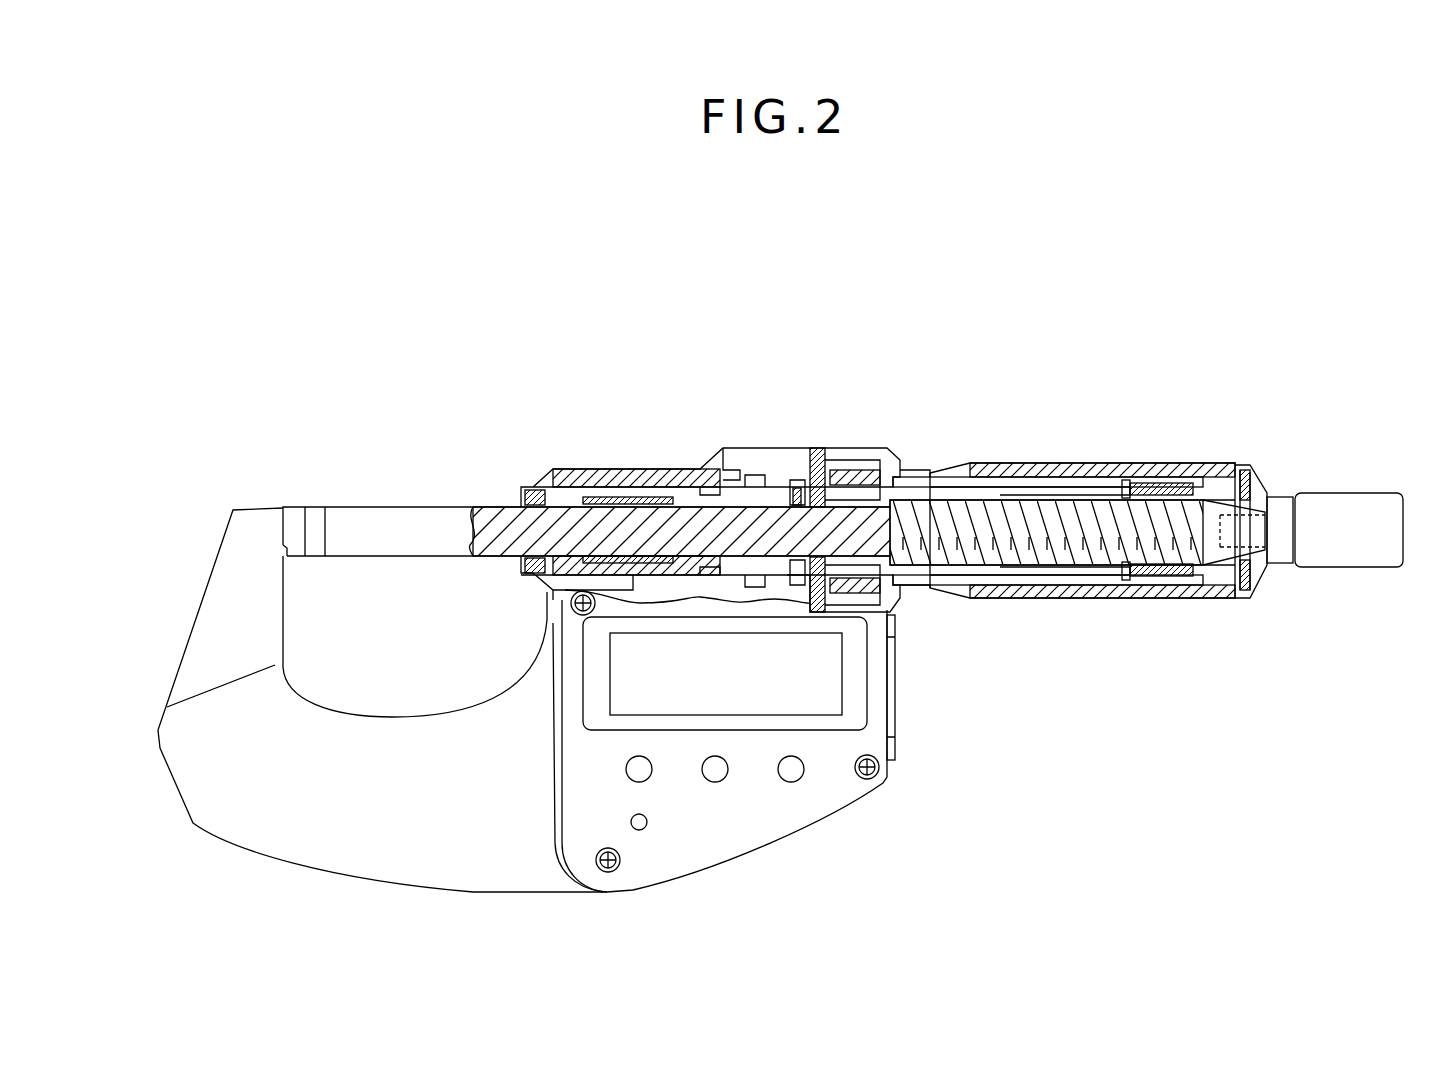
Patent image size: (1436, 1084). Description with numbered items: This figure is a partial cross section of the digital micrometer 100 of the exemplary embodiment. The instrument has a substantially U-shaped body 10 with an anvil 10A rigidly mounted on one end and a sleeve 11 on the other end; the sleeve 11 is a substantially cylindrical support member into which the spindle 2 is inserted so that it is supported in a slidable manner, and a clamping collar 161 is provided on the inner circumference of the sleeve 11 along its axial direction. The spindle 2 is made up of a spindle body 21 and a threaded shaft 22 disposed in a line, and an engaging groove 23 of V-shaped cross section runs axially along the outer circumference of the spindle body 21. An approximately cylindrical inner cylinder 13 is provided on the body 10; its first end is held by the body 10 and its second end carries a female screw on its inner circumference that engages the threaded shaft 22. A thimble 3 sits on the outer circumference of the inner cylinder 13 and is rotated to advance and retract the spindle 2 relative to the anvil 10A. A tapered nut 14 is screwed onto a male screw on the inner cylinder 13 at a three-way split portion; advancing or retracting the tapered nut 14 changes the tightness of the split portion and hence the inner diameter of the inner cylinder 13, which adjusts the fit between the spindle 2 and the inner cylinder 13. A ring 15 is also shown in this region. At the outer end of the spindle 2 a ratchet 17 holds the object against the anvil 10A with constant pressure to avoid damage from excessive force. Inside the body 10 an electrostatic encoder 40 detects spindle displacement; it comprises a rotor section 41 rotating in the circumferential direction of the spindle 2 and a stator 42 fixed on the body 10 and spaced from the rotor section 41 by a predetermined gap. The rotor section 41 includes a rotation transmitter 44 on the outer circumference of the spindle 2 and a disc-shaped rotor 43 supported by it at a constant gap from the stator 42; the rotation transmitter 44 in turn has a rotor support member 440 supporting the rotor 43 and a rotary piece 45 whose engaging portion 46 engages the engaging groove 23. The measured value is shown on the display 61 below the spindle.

The digital micrometer 100 is at (1041, 292).
The spindle 2 is at (442, 520).
The spindle body 21 is at (390, 505).
The anvil 10A is at (288, 507).
The sleeve 11 is at (532, 487).
The body 10 is at (583, 470).
The clamping collar 161 is at (618, 505).
The engaging groove 23 is at (680, 507).
The encoder 40 is at (880, 267).
The rotor section 41 is at (832, 308).
The stator 42 is at (823, 458).
The rotor 43 is at (815, 458).
The rotation transmitter 44 is at (798, 352).
The rotary piece 45 is at (780, 458).
The engaging portion 46 is at (742, 458).
The rotor support member 440 is at (807, 458).
The inner cylinder 13 is at (960, 497).
The threaded shaft 22 is at (1008, 497).
The thimble 3 is at (1070, 463).
The seal ring 15 is at (1103, 495).
The tapered nut 14 is at (1162, 495).
The ratchet 17 is at (1323, 505).
The display 61 is at (813, 688).